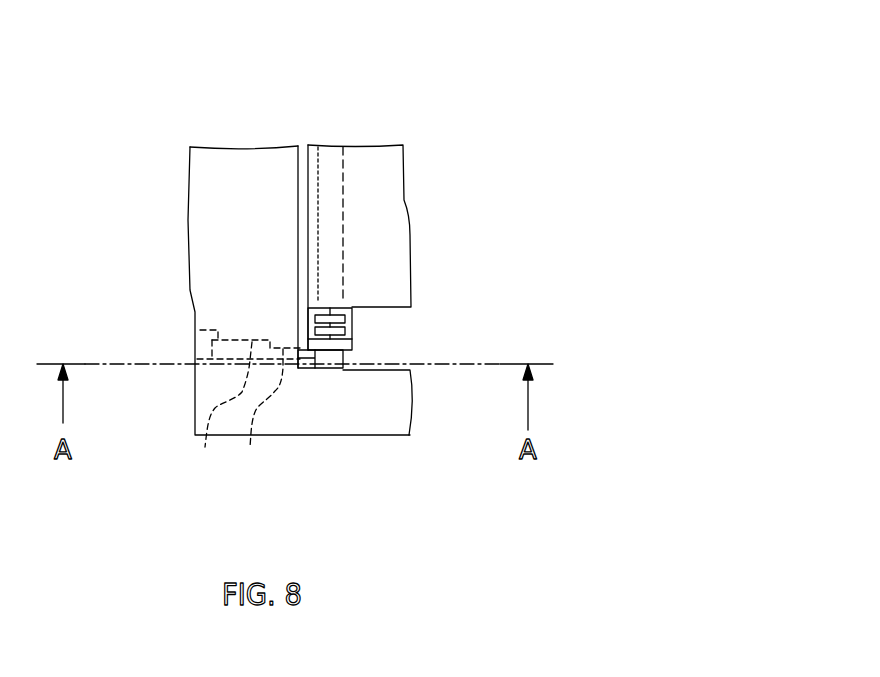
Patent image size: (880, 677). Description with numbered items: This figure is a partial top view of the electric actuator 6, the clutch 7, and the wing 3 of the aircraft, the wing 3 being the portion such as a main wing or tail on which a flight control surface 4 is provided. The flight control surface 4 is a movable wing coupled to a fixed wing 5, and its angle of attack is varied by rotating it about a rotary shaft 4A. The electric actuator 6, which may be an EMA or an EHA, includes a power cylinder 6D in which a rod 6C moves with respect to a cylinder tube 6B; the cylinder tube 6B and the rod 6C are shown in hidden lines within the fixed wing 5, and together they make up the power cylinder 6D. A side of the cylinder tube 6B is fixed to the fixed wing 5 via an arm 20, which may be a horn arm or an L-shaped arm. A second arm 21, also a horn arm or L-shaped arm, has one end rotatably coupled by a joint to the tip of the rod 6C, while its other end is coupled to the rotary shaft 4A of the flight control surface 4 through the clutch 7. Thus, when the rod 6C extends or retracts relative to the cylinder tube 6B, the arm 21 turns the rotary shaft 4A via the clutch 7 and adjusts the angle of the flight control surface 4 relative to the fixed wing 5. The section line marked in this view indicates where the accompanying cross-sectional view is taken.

The wing 3 is at (240, 111).
The flight control surface 4 is at (387, 212).
The rotary shaft 4A is at (338, 270).
The fixed wing 5 is at (210, 225).
The electric actuator 6 is at (235, 327).
The cylinder tube 6B is at (218, 413).
The rod 6C is at (259, 417).
The power cylinder 6D is at (178, 472).
The clutch 7 is at (352, 322).
The arm 20 is at (200, 328).
The arm 21 is at (352, 342).